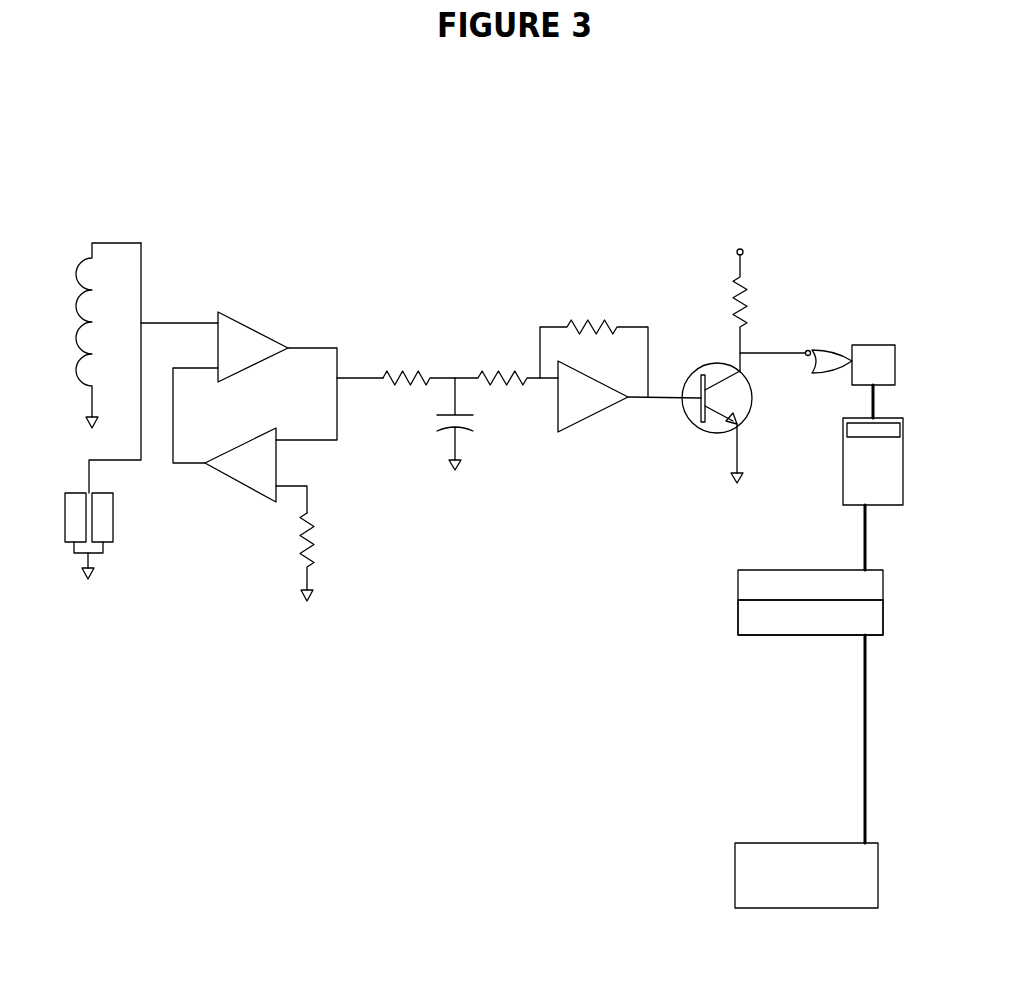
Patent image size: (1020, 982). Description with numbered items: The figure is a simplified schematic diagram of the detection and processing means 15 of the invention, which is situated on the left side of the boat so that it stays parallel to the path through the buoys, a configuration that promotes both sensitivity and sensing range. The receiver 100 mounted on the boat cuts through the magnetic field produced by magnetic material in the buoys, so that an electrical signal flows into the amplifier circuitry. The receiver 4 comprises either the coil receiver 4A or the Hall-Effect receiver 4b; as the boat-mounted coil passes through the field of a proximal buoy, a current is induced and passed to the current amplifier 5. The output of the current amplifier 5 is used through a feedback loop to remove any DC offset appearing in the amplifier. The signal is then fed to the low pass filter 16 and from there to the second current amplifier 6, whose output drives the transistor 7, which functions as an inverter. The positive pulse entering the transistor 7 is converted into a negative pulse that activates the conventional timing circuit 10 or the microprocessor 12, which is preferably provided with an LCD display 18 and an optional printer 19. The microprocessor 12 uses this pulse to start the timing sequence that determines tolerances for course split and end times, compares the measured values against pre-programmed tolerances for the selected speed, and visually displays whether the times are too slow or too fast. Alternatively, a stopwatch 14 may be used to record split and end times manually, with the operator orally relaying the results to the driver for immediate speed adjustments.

The receiver 100 is at (508, 166).
The coil receiver 4A is at (90, 292).
The receiver 4 is at (141, 323).
The Hall-Effect receiver 4b is at (90, 530).
The current amplifier 5 is at (255, 350).
The low pass filter 16 is at (455, 378).
The second current amplifier 6 is at (595, 393).
The transistor 7 is at (690, 390).
The timing circuit 10 is at (852, 352).
The stopwatch 14 is at (860, 467).
The microprocessor 12 is at (748, 587).
The LCD display 18 is at (798, 623).
The printer 19 is at (745, 858).
The detection and processing means 15 is at (452, 710).